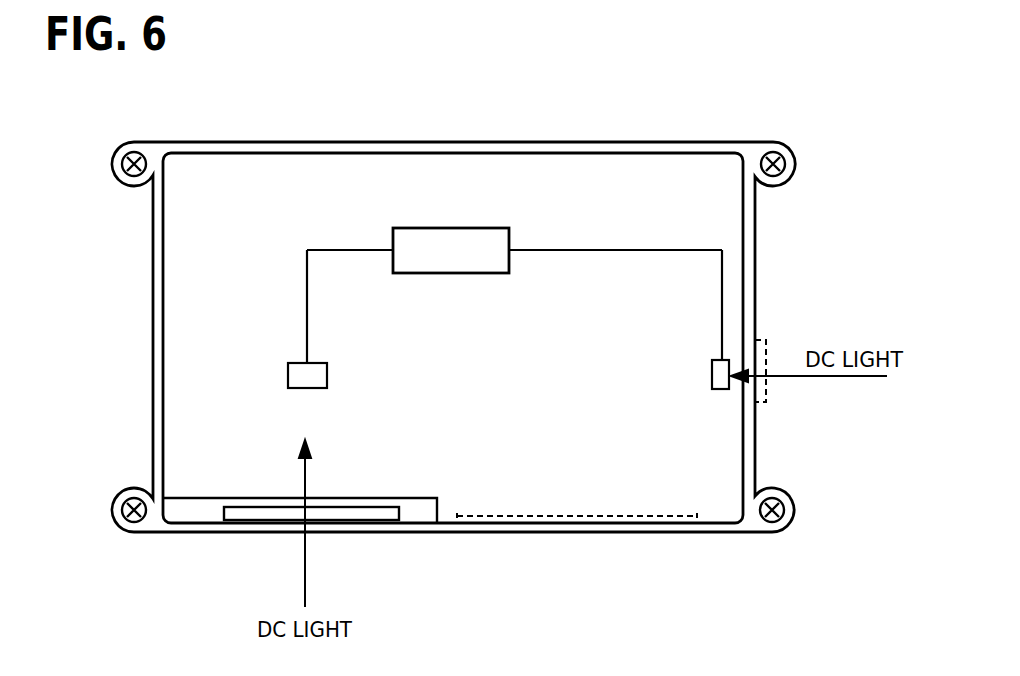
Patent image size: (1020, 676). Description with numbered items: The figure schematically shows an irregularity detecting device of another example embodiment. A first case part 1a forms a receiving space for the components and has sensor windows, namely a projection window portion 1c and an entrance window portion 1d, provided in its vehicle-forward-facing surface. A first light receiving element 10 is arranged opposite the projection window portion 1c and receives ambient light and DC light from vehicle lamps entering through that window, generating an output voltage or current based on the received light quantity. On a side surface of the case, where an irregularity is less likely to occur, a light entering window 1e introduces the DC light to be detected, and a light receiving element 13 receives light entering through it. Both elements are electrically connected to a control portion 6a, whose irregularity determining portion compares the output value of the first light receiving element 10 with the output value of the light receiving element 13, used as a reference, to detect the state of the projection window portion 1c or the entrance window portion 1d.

The first case part 1a is at (588, 150).
The projection window portion 1c is at (383, 520).
The entrance window portion 1d is at (677, 521).
The light entering window 1e is at (766, 402).
The control portion 6a is at (478, 228).
The first light receiving element 10 is at (288, 375).
The light receiving element 13 is at (728, 360).